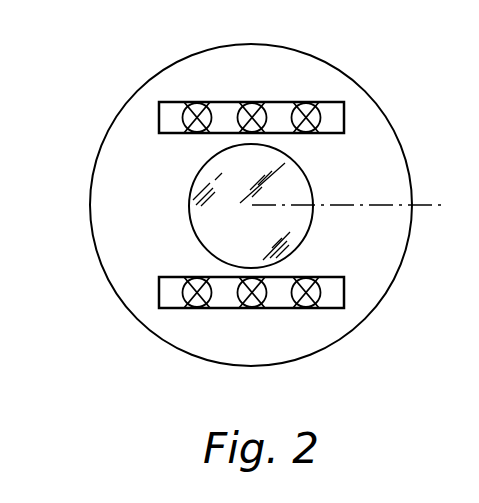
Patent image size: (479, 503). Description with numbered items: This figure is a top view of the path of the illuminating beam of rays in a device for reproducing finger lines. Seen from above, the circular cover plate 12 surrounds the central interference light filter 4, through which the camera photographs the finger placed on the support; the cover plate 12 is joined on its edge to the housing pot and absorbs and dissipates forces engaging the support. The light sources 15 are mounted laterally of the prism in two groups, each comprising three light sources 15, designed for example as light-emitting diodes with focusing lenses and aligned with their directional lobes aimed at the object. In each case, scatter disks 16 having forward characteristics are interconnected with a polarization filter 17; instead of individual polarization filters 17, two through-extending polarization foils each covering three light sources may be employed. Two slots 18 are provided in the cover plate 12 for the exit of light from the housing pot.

The interference light filter 4 is at (198, 219).
The cover plate 12 is at (96, 231).
The light sources 15 is at (306, 102).
The scatter disks 16 is at (252, 102).
The polarization filter 17 is at (197, 102).
The slots 18 is at (163, 118).